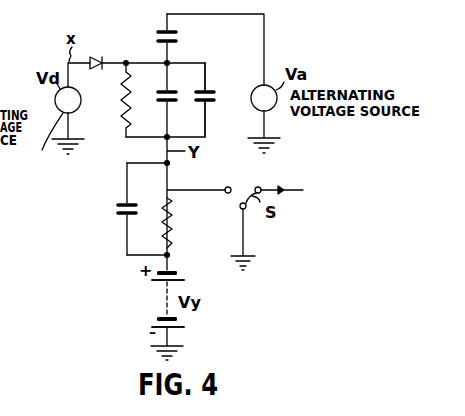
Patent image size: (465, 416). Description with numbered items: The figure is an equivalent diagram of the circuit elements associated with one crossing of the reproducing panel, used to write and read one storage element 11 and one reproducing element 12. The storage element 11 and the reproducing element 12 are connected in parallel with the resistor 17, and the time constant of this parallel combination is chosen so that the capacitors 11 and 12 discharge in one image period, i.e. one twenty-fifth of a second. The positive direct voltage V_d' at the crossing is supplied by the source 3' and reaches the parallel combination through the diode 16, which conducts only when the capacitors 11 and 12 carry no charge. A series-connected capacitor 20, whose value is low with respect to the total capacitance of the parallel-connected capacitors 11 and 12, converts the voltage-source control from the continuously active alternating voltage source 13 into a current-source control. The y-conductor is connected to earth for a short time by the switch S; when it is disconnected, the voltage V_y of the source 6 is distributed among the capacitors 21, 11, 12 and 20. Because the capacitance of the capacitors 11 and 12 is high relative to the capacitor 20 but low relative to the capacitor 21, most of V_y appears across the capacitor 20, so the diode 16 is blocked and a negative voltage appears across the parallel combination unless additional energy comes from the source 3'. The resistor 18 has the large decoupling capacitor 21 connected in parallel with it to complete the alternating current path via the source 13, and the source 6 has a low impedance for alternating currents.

The video signal source 3' is at (46, 142).
The source 6 is at (166, 300).
The storage element 11 is at (160, 92).
The reproducing element 12 is at (202, 92).
The continuously active source 13 is at (253, 90).
The diode 16 is at (93, 57).
The resistor 17 is at (122, 105).
The resistor 18 is at (172, 231).
The series-connected capacitor 20 is at (176, 41).
The decoupling capacitor 21 is at (118, 205).